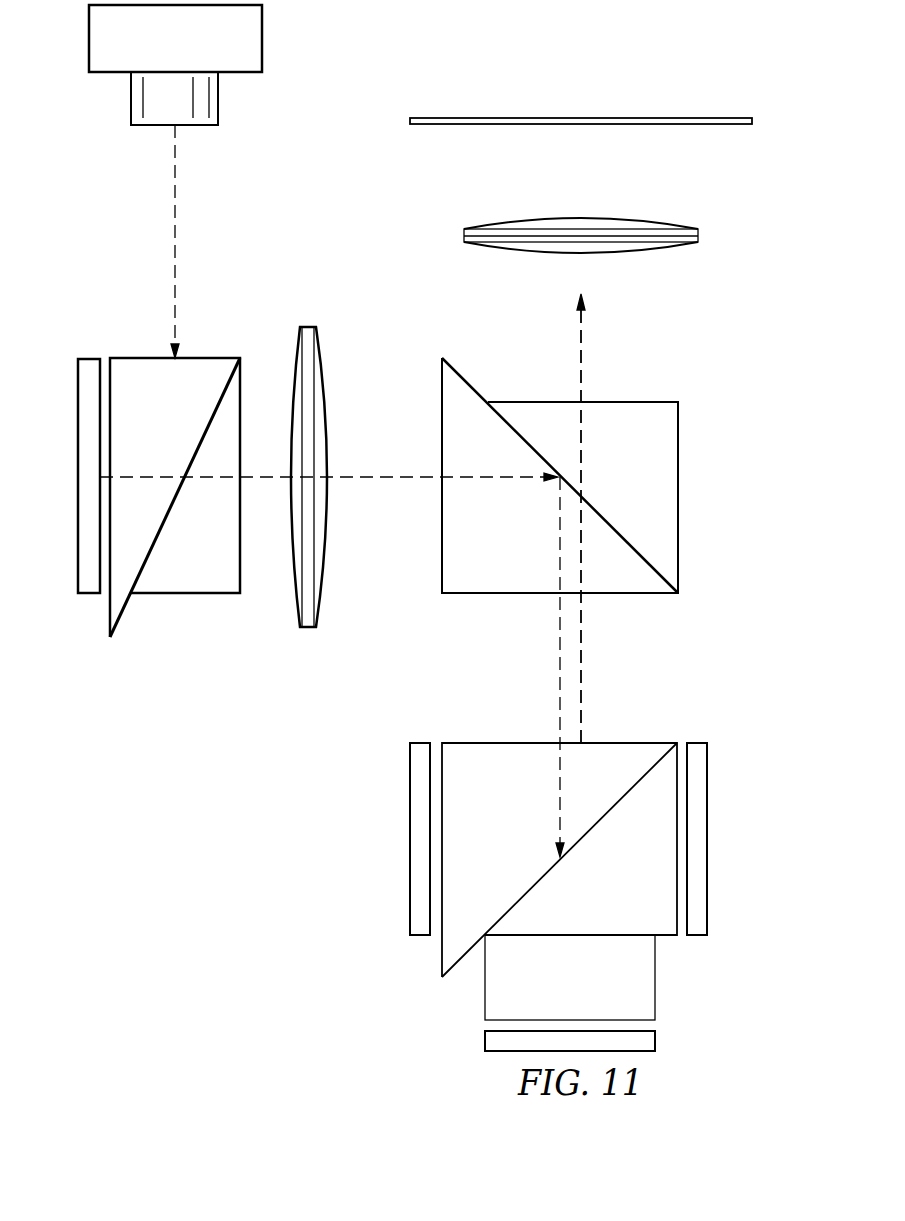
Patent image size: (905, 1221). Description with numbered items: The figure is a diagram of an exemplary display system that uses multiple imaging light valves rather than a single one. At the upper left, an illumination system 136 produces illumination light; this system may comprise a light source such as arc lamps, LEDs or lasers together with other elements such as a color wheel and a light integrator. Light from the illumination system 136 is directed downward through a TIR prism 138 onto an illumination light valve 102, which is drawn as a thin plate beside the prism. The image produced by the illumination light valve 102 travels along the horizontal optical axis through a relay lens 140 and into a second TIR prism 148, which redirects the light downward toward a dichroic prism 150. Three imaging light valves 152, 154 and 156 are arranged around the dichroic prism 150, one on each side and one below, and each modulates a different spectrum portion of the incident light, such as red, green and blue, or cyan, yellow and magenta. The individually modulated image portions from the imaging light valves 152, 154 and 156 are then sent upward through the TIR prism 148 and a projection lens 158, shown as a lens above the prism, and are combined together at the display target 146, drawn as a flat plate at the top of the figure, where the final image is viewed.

The illumination system 136 is at (88, 33).
The illumination light valve 102 is at (78, 455).
The TIR prism 138 is at (160, 597).
The relay lens 140 is at (308, 326).
The TIR prism 148 is at (678, 465).
The display target 146 is at (752, 121).
The projection lens 158 is at (698, 237).
The dichroic prism 150 is at (627, 743).
The imaging light valve 152 is at (410, 858).
The imaging light valve 154 is at (710, 858).
The imaging light valve 156 is at (655, 1040).